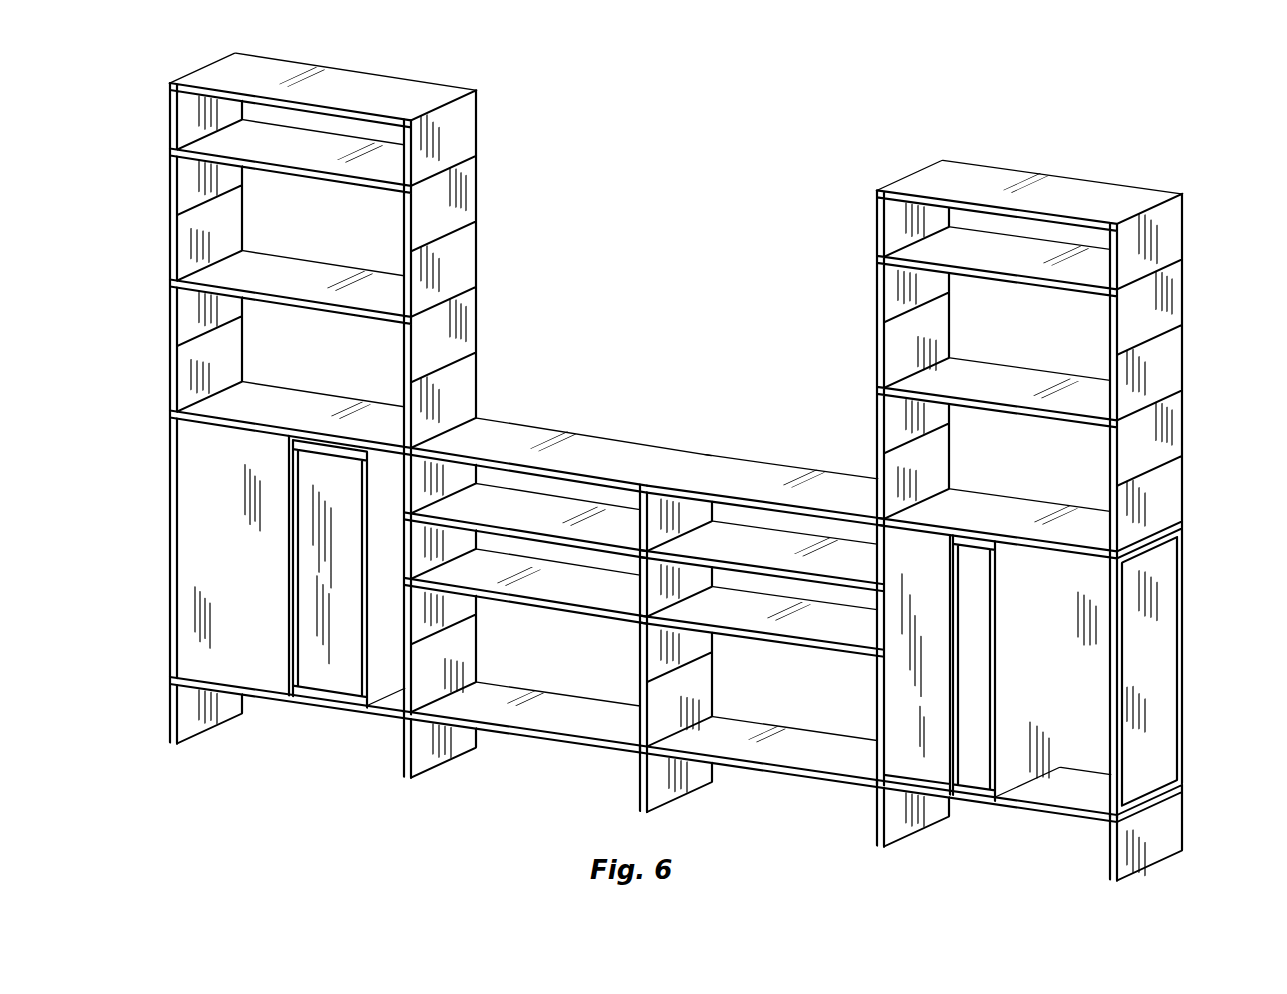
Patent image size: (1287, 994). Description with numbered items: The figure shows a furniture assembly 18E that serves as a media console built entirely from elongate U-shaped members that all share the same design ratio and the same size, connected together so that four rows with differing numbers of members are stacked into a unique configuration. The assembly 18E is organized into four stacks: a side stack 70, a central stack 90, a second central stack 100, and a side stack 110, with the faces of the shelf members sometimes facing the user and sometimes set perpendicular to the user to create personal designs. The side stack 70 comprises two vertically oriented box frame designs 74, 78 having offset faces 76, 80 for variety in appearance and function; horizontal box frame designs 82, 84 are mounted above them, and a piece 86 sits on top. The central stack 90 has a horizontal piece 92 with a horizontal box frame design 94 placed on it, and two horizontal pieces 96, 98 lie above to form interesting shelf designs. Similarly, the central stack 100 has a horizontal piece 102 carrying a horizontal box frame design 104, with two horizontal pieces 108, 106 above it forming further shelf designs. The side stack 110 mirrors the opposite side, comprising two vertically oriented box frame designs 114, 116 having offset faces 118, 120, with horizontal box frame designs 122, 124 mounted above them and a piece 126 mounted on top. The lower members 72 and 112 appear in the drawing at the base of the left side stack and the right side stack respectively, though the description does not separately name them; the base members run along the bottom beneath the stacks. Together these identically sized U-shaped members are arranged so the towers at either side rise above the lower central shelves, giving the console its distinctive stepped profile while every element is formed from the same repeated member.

The furniture assembly 18E is at (128, 80).
The side stack 70 is at (308, 740).
The base shelf 72 is at (170, 701).
The vertical oriented box frame design 74 is at (170, 528).
The offset face 76 is at (249, 591).
The vertical oriented box frame design 78 is at (318, 462).
The offset face 80 is at (354, 517).
The horizontal box frame design 82 is at (172, 346).
The horizontal box frame design 84 is at (172, 211).
The piece 86 is at (466, 118).
The central stack 90 is at (573, 784).
The horizontal piece 92 is at (425, 764).
The horizontal box frame design 94 is at (475, 623).
The horizontal piece 96 is at (538, 506).
The horizontal piece 98 is at (488, 432).
The central stack 100 is at (804, 812).
The horizontal piece 102 is at (693, 791).
The horizontal box frame design 104 is at (721, 665).
The horizontal piece 106 is at (667, 516).
The horizontal piece 108 is at (658, 594).
The side stack 110 is at (1047, 838).
The support panel 112 is at (896, 838).
The vertical oriented box frame design 114 is at (930, 567).
The vertical oriented box frame design 116 is at (1180, 689).
The offset face 118 is at (941, 703).
The offset face 120 is at (1109, 755).
The horizontal box frame design 122 is at (1165, 518).
The horizontal box frame design 124 is at (1163, 363).
The piece 126 is at (1183, 229).